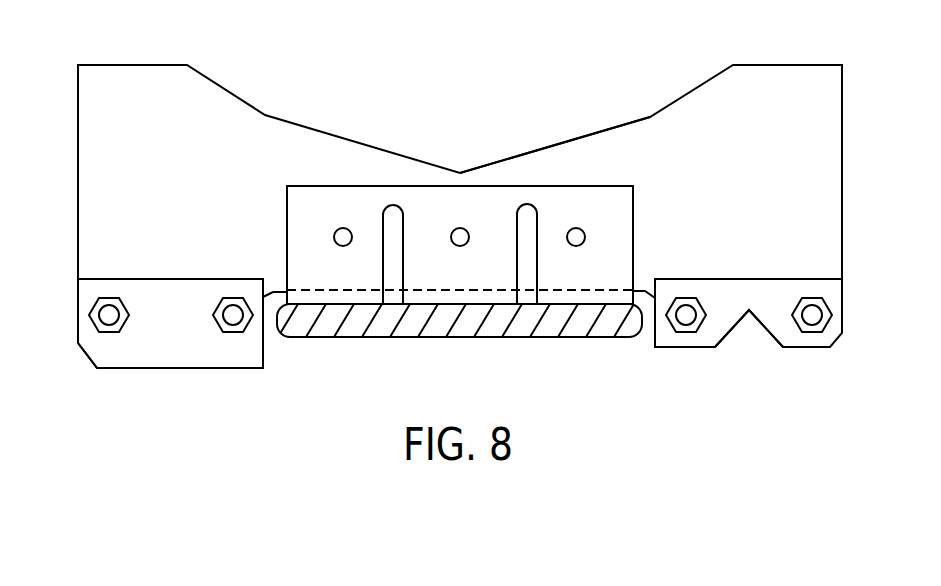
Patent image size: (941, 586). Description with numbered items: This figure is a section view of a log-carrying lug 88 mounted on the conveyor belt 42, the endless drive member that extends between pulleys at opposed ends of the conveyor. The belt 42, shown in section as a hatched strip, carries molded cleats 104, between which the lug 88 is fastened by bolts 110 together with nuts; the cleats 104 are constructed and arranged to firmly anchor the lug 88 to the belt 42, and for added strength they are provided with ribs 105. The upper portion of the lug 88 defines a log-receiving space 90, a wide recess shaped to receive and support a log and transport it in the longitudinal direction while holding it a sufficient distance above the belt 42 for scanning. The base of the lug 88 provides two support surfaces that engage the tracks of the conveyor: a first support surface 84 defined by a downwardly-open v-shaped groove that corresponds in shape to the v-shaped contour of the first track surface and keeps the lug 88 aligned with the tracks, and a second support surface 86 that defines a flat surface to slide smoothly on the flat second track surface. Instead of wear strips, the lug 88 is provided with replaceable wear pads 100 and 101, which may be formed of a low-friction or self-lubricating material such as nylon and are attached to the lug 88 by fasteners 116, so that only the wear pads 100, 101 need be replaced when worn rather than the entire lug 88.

The conveyor belt 42 is at (461, 324).
The first support surface 84 is at (752, 335).
The second support surface 86 is at (179, 385).
The log-carrying lug 88 is at (842, 118).
The log-receiving space 90 is at (484, 119).
The wear pad 100 is at (113, 350).
The wear pad 101 is at (716, 312).
The molded cleat 104 is at (285, 200).
The rib 105 is at (405, 211).
The bolt 110 is at (582, 229).
The fastener 116 is at (90, 315).